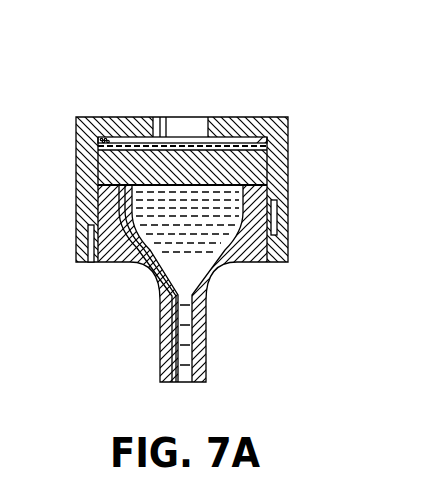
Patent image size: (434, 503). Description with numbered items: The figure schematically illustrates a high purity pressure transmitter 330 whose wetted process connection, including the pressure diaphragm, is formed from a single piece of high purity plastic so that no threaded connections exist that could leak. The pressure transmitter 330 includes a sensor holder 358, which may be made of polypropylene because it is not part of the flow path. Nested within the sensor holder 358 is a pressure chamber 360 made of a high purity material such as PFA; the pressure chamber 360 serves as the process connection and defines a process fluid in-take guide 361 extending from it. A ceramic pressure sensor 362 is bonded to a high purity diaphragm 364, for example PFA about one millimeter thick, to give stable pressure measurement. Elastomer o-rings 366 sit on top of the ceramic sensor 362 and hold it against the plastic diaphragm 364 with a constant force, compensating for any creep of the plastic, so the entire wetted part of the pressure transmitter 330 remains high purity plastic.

The high purity pressure transmitter 330 is at (304, 146).
The sensor holder 358 is at (107, 126).
The pressure chamber 360 is at (220, 282).
The process fluid in-take guide 361 is at (167, 325).
The ceramic pressure sensor 362 is at (223, 146).
The high purity diaphragm 364 is at (262, 183).
The elastomer o-rings 366 is at (100, 143).